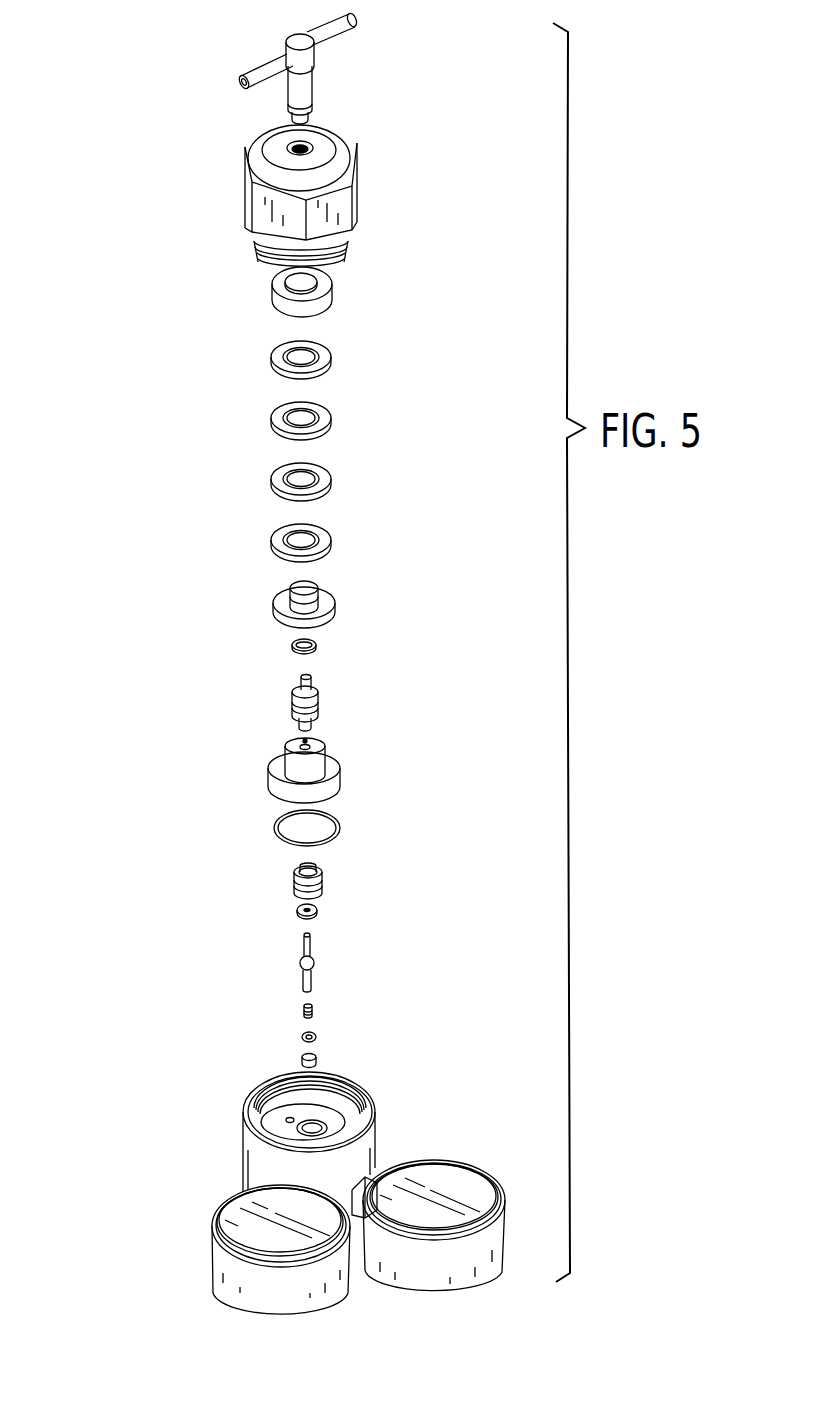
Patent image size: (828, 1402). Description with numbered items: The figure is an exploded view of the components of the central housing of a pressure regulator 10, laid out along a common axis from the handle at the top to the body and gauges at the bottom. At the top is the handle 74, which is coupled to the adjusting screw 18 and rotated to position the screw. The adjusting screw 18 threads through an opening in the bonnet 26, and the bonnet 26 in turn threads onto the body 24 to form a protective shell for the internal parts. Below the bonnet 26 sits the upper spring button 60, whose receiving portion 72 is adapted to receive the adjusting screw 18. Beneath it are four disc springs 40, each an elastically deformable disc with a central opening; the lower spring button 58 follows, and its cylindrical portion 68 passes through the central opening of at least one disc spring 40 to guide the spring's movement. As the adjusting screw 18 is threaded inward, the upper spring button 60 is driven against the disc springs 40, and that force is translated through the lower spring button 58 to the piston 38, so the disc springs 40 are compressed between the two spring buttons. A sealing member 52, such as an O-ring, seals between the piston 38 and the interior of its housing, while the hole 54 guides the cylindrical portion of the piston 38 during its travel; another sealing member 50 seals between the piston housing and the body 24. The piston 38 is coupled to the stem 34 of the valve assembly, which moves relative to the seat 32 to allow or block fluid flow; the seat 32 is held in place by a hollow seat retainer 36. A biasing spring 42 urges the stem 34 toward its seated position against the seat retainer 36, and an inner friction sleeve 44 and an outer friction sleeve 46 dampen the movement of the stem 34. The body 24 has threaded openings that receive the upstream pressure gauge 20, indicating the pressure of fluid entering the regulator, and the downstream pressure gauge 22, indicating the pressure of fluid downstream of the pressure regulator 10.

The pressure regulator 10 is at (141, 105).
The adjusting screw 18 is at (300, 90).
The upstream pressure gauge 20 is at (318, 1303).
The downstream pressure gauge 22 is at (457, 1278).
The body 24 is at (243, 1145).
The bonnet 26 is at (358, 202).
The seat 32 is at (297, 910).
The stem 34 is at (313, 980).
The seat retainer 36 is at (322, 886).
The piston 38 is at (318, 695).
The disc springs 40 is at (333, 357).
The biasing spring 42 is at (315, 1010).
The inner friction sleeve 44 is at (318, 1037).
The outer friction sleeve 46 is at (302, 1060).
The sealing member 50 is at (340, 832).
The sealing member 52 is at (292, 645).
The hole 54 is at (303, 744).
The lower spring button 58 is at (338, 800).
The upper spring button 60 is at (312, 287).
The cylindrical portion 68 is at (321, 746).
The receiving portion 72 is at (300, 283).
The handle 74 is at (334, 32).